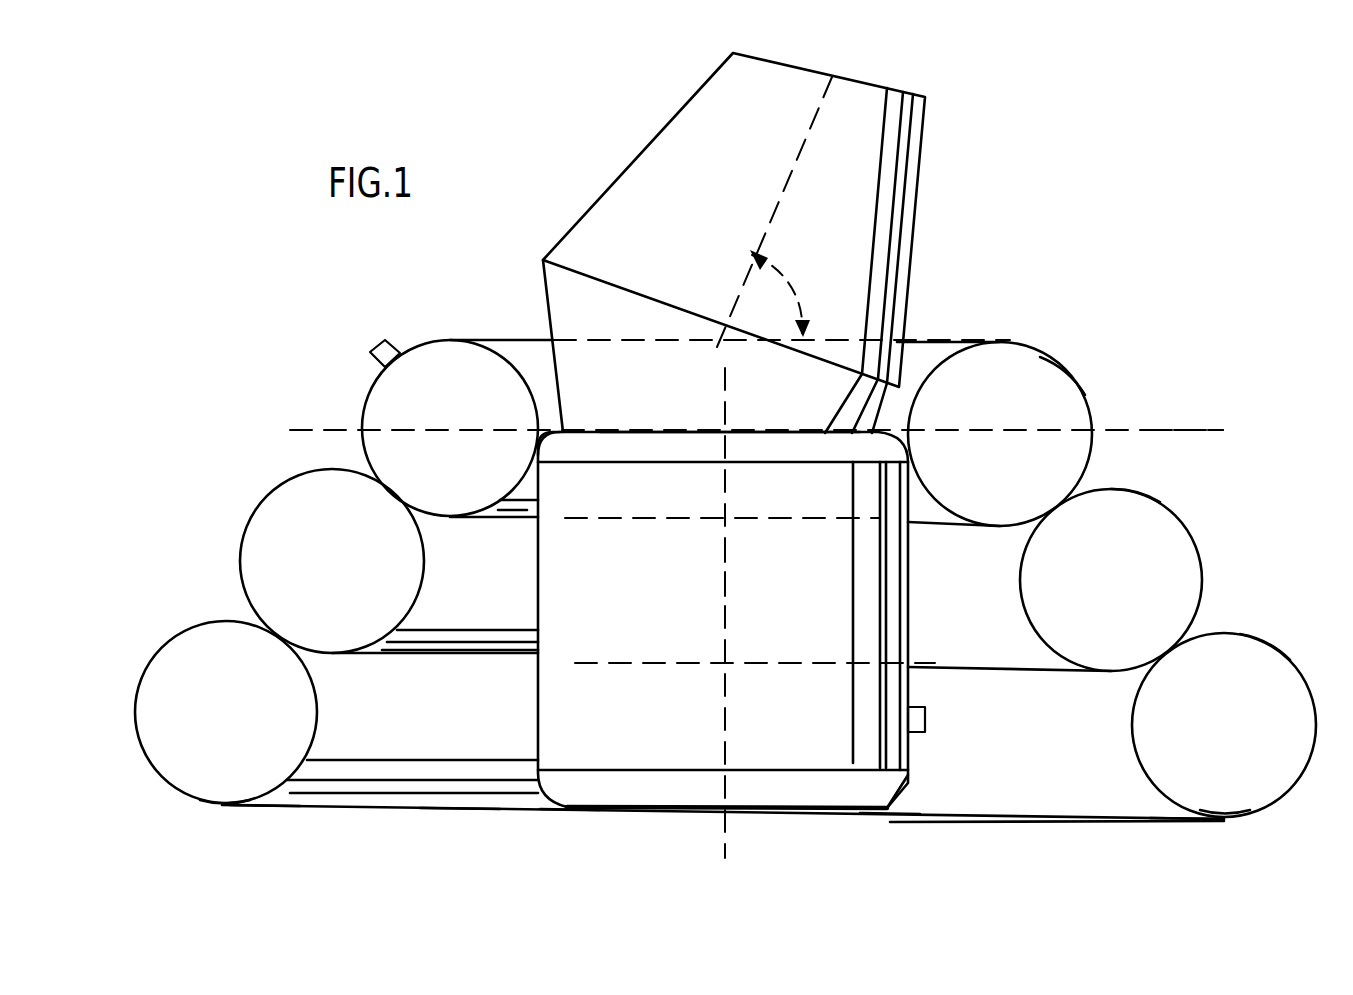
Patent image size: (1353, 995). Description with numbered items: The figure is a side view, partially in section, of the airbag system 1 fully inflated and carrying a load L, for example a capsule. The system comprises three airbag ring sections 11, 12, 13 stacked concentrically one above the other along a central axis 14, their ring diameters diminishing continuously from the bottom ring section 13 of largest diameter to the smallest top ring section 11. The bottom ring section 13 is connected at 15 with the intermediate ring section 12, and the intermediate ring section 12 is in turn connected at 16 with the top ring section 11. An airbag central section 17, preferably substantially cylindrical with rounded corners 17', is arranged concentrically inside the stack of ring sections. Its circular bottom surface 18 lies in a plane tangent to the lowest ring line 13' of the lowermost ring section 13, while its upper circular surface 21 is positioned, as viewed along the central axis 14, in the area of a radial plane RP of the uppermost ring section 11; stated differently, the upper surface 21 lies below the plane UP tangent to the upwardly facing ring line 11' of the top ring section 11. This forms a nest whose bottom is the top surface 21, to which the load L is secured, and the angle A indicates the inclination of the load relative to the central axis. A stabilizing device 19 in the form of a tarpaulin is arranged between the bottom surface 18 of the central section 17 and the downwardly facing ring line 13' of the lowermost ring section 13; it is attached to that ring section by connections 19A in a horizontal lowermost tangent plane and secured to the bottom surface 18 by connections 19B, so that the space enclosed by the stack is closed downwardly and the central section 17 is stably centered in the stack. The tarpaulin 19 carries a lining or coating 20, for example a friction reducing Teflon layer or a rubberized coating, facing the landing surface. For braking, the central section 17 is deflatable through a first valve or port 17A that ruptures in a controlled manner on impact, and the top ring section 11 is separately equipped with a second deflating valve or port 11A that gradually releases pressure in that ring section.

The airbag system 1 is at (1086, 129).
The load L is at (642, 173).
The angle A is at (805, 277).
The plane tangent to upwardly facing ring line UP is at (930, 338).
The radial plane RP is at (1203, 428).
The top ring section 11 is at (1077, 382).
The upwardly facing ring line 11' is at (727, 404).
The second deflating valve or port 11A is at (378, 357).
The intermediate ring section 12 is at (1160, 493).
The bottom ring section 13 is at (1286, 642).
The lowest ring line 13' is at (723, 839).
The central axis 14 is at (727, 577).
The connection 15 is at (273, 637).
The connection 16 is at (388, 495).
The airbag central section 17 is at (695, 620).
The corners 17' is at (754, 620).
The first deflating valve or port 17A is at (925, 718).
The bottom surface 18 is at (767, 812).
The stabilizing device 19 is at (382, 810).
The connections 19A is at (247, 807).
The connections 19B is at (570, 813).
The lining or coating 20 is at (458, 800).
The upper surface 21 is at (773, 430).